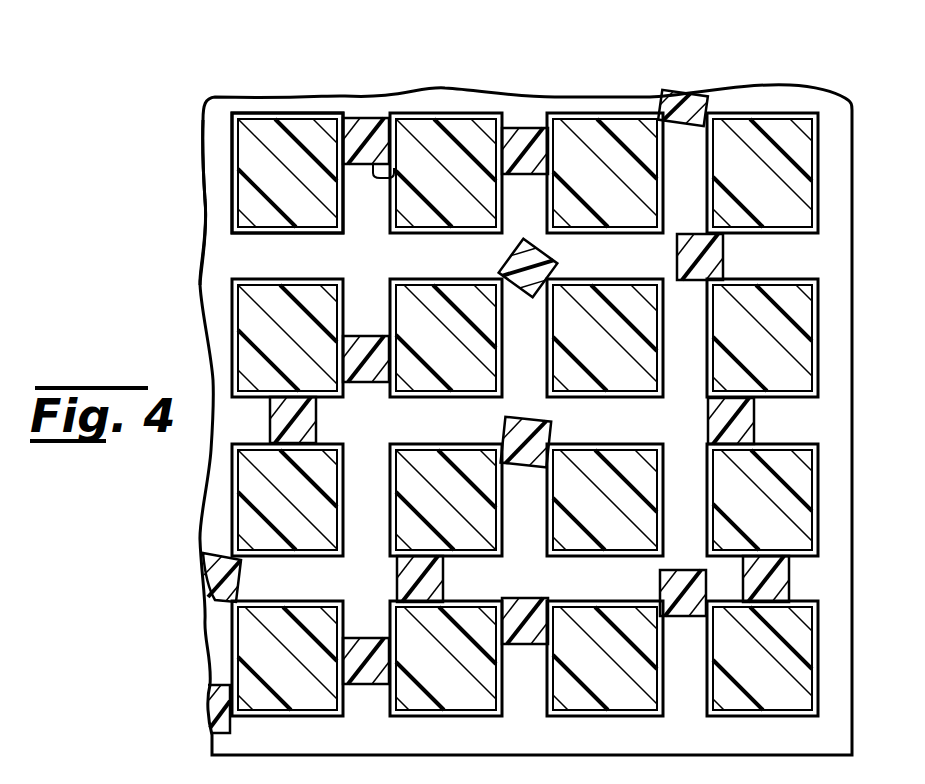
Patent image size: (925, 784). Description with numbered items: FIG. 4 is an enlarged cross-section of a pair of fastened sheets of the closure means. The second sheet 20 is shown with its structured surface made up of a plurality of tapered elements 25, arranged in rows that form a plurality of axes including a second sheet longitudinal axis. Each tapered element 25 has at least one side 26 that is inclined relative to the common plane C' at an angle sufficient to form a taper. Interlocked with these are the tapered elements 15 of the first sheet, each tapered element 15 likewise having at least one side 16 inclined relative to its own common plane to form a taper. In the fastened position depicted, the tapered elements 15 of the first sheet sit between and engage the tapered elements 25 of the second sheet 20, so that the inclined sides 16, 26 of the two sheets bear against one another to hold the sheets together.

The tapered element 15 is at (368, 116).
The side 16 is at (398, 173).
The second sheet 20 is at (205, 214).
The tapered element 25 is at (244, 158).
The side 26 is at (227, 130).
The common plane C' is at (161, 229).